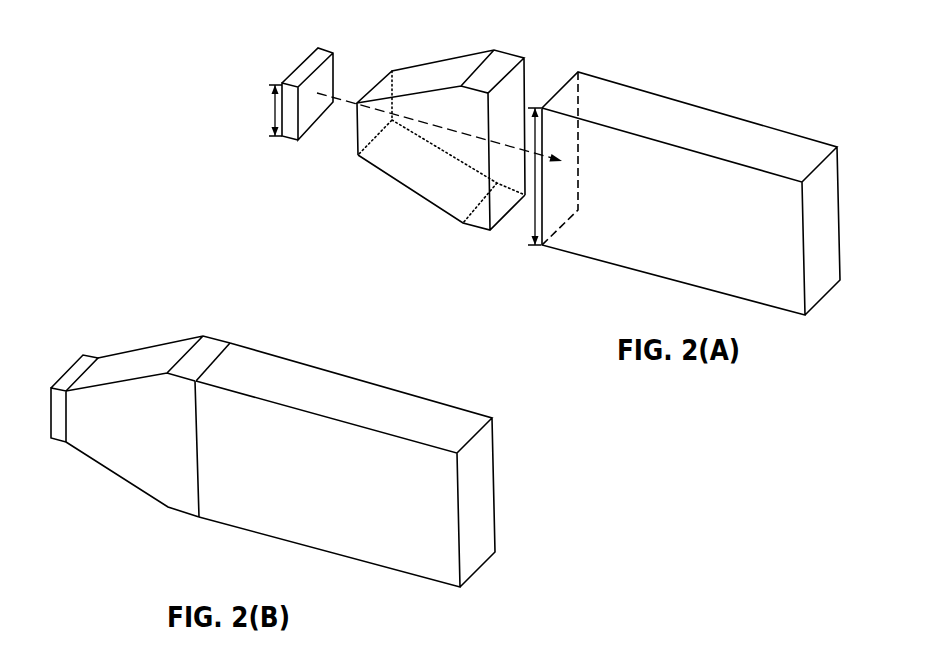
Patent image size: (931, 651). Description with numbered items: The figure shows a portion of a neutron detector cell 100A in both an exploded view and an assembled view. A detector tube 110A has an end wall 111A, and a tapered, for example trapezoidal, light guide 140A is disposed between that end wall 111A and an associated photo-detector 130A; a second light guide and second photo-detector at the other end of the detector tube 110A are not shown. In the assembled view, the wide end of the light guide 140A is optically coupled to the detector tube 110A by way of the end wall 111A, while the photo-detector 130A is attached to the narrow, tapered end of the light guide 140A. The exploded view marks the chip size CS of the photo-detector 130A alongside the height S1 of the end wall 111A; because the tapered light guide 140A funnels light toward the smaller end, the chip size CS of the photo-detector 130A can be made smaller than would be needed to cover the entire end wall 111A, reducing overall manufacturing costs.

In FIG. 2A, the neutron detector cell 100A is at (530, 161).
In FIG. 2B, the neutron detector cell 100A is at (273, 382).
In FIG. 2A, the detector tube 110A is at (757, 122).
In FIG. 2B, the detector tube 110A is at (388, 387).
In FIG. 2A, the end wall 111A is at (560, 83).
In FIG. 2B, the end wall 111A is at (215, 355).
In FIG. 2A, the photo-detector 130A is at (293, 69).
In FIG. 2B, the photo-detector 130A is at (90, 353).
In FIG. 2A, the tapered light guide 140A is at (435, 60).
In FIG. 2B, the tapered light guide 140A is at (162, 343).
In FIG. 2A, the chip size CS is at (274, 117).
In FIG. 2A, the light incident face height S1 is at (530, 225).